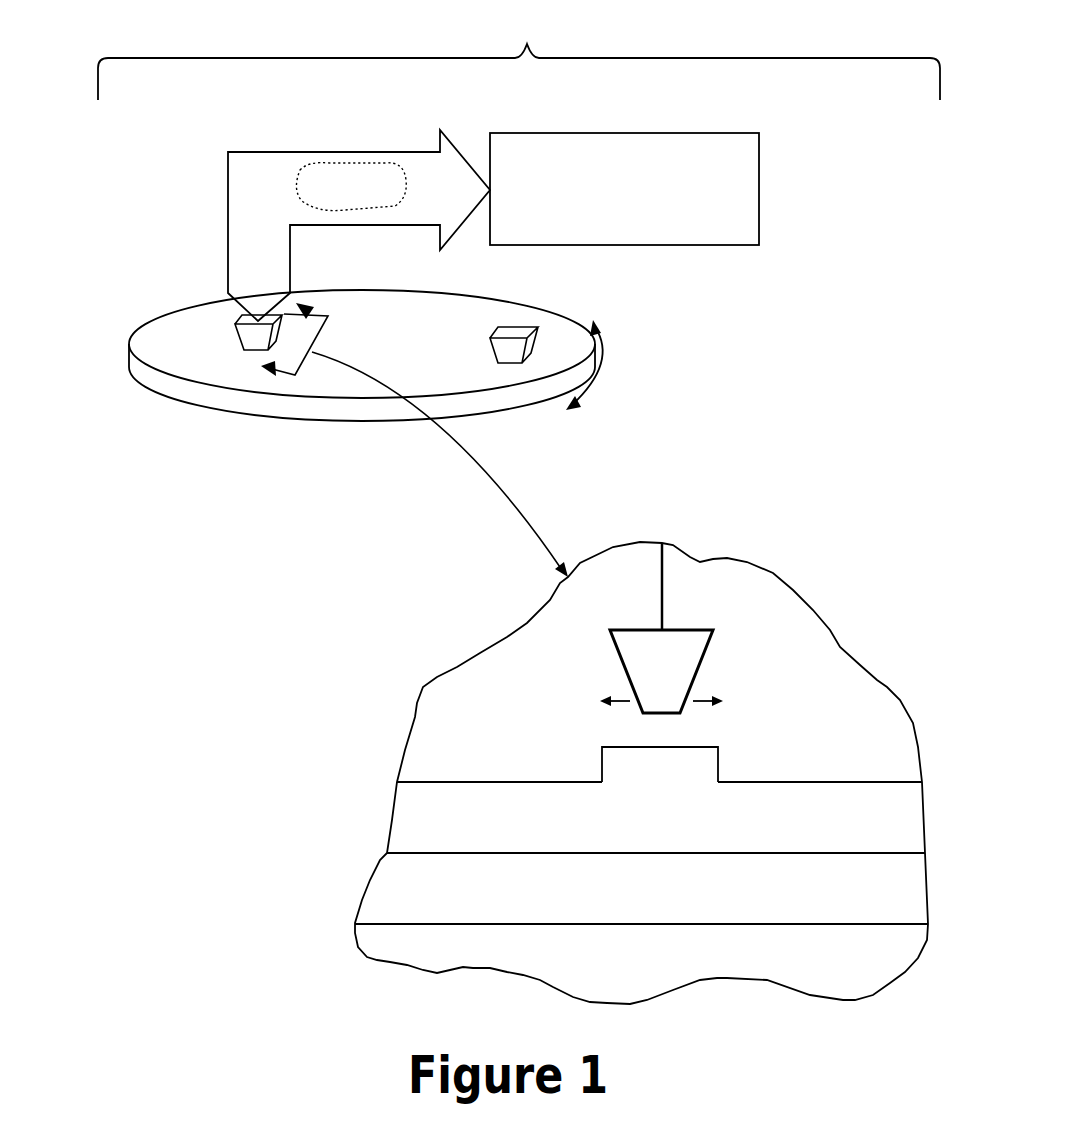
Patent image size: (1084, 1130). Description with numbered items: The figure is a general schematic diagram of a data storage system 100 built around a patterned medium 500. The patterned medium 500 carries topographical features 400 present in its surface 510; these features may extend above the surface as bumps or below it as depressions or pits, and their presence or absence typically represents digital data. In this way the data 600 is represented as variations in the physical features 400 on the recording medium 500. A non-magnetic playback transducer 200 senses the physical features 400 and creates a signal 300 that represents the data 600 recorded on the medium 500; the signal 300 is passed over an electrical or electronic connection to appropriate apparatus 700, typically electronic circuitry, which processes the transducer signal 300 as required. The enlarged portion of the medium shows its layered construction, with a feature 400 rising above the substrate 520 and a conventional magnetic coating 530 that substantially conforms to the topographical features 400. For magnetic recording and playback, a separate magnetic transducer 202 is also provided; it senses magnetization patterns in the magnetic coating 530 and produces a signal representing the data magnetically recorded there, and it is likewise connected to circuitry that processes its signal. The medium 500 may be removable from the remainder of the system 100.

The data storage system 100 is at (519, 54).
The non-magnetic playback transducer 200 is at (698, 670).
The magnetic transducer 202 is at (533, 333).
The signal 300 is at (258, 152).
The topographical features 400 is at (615, 762).
The patterned medium 500 is at (236, 446).
The surface 510 is at (477, 361).
The substrate 520 is at (518, 904).
The magnetic coating 530 is at (518, 830).
The data 600 is at (372, 163).
The apparatus 700 is at (724, 133).